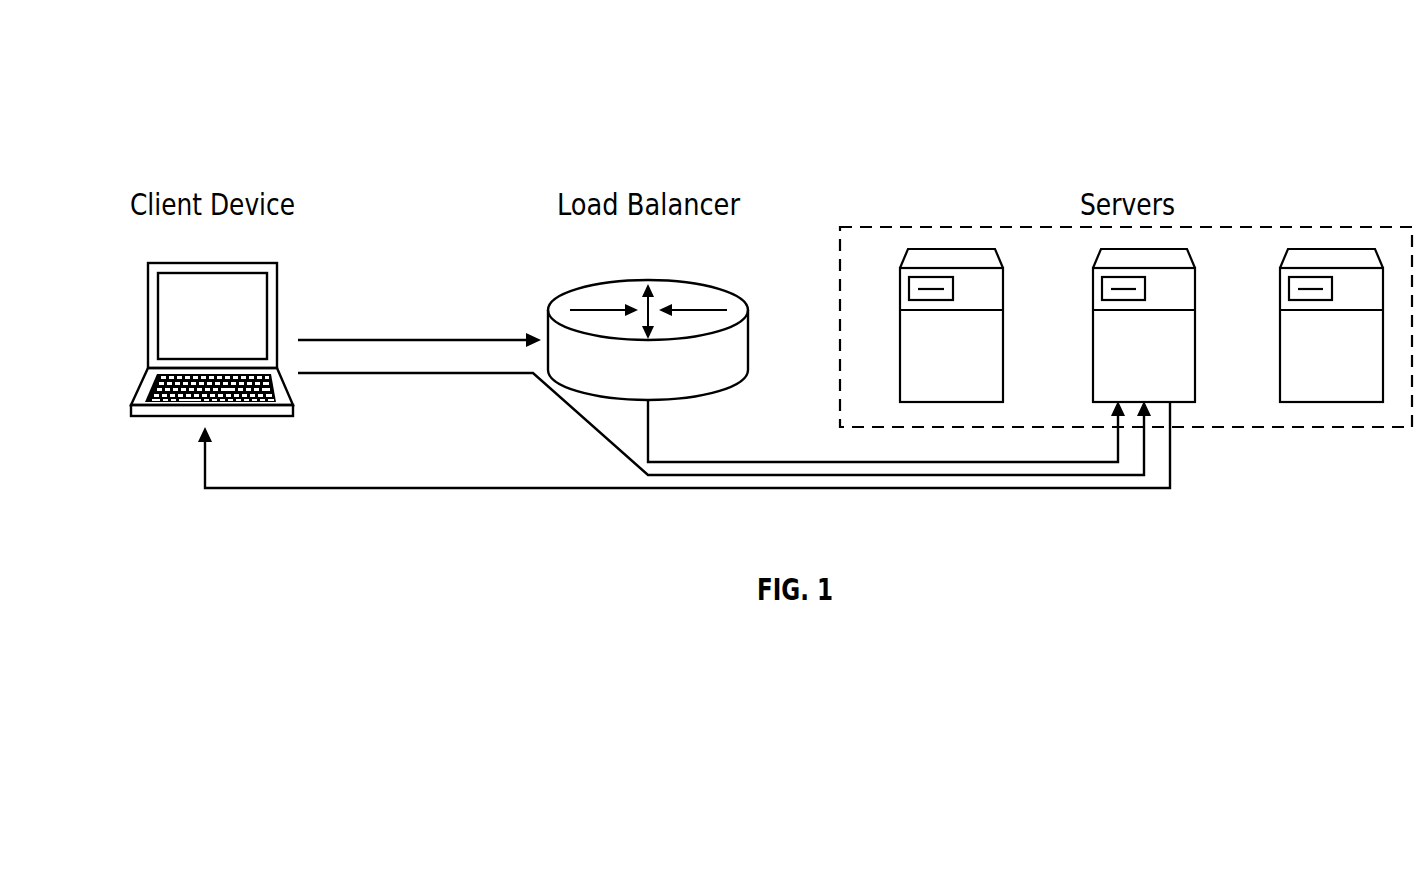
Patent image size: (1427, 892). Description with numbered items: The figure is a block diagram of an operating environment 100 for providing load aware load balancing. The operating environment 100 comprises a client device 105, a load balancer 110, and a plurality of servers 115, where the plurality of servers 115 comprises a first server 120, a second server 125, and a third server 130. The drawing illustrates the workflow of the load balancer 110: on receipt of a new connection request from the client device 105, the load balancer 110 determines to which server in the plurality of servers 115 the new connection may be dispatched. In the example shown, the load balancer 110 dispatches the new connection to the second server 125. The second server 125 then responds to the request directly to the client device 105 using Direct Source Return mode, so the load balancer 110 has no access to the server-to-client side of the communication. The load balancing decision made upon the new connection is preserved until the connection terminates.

The operating environment 100 is at (210, 70).
The client device 105 is at (278, 312).
The load balancer 110 is at (566, 296).
The plurality of servers 115 is at (918, 226).
The first server 120 is at (900, 337).
The second server 125 is at (1093, 340).
The third server 130 is at (1280, 340).